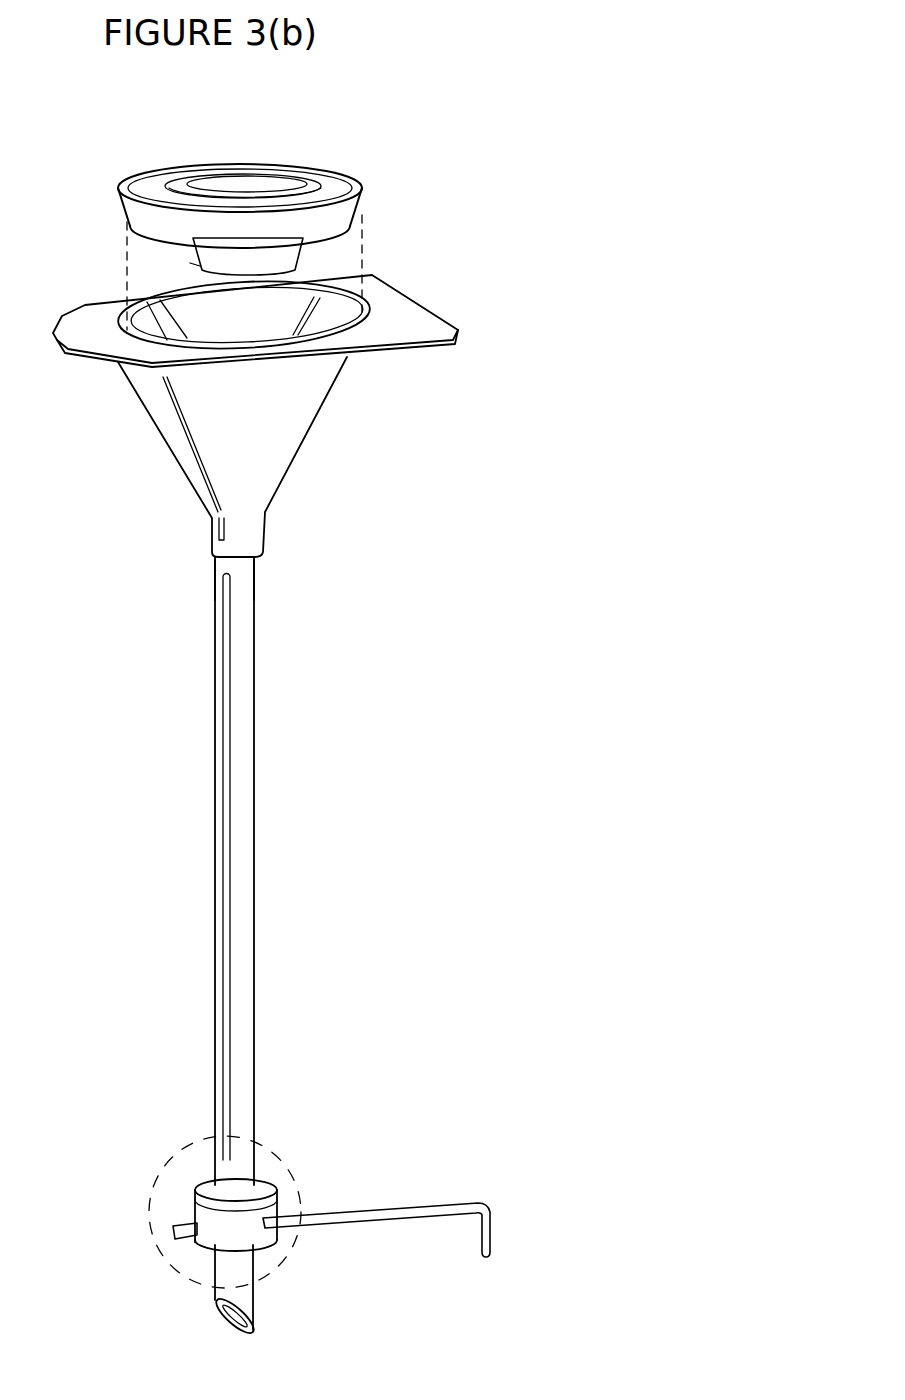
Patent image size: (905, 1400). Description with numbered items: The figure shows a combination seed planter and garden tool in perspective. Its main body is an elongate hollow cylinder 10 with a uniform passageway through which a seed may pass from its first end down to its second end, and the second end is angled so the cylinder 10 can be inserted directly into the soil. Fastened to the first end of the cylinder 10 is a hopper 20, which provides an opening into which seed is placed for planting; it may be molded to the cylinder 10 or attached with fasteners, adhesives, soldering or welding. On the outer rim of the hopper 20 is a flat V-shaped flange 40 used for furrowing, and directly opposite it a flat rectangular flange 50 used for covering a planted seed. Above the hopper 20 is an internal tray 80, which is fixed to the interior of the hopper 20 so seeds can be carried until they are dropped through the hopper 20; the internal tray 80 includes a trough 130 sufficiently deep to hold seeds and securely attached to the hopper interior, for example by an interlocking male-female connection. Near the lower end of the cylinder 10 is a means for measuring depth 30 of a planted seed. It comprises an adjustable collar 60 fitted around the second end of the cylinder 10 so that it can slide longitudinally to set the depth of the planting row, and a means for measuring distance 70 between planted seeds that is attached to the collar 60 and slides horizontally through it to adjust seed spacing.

The elongate hollow cylinder 10 is at (258, 868).
The hopper 20 is at (298, 455).
The means for measuring depth 30 is at (300, 1182).
The V-shaped flange 40 is at (73, 315).
The rectangular flange 50 is at (415, 298).
The adjustable collar 60 is at (197, 1183).
The means for measuring distance 70 is at (493, 1208).
The internal tray 80 is at (355, 215).
The trough 130 is at (353, 180).